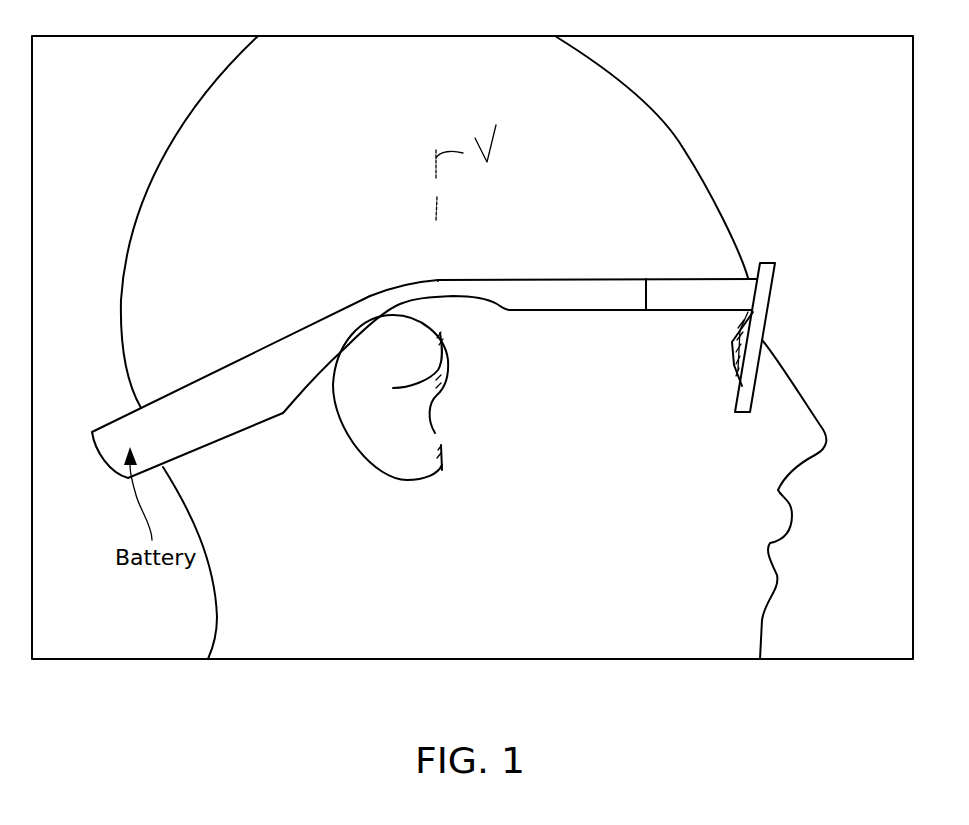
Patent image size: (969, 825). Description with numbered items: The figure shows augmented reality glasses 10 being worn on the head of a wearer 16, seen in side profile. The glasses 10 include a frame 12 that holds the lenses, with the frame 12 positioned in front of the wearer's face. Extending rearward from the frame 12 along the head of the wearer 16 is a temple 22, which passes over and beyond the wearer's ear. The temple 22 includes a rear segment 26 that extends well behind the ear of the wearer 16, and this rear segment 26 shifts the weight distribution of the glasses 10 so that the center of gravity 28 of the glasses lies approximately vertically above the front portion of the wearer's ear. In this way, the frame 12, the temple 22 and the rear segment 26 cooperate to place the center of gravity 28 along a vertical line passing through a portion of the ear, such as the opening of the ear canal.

The augmented reality (AR) glasses 10 is at (464, 335).
The frame 12 is at (776, 276).
The wearer 16 is at (689, 151).
The right temple 22 is at (552, 278).
The rear segment 26 is at (232, 368).
The center of gravity (CG) 28 is at (438, 275).